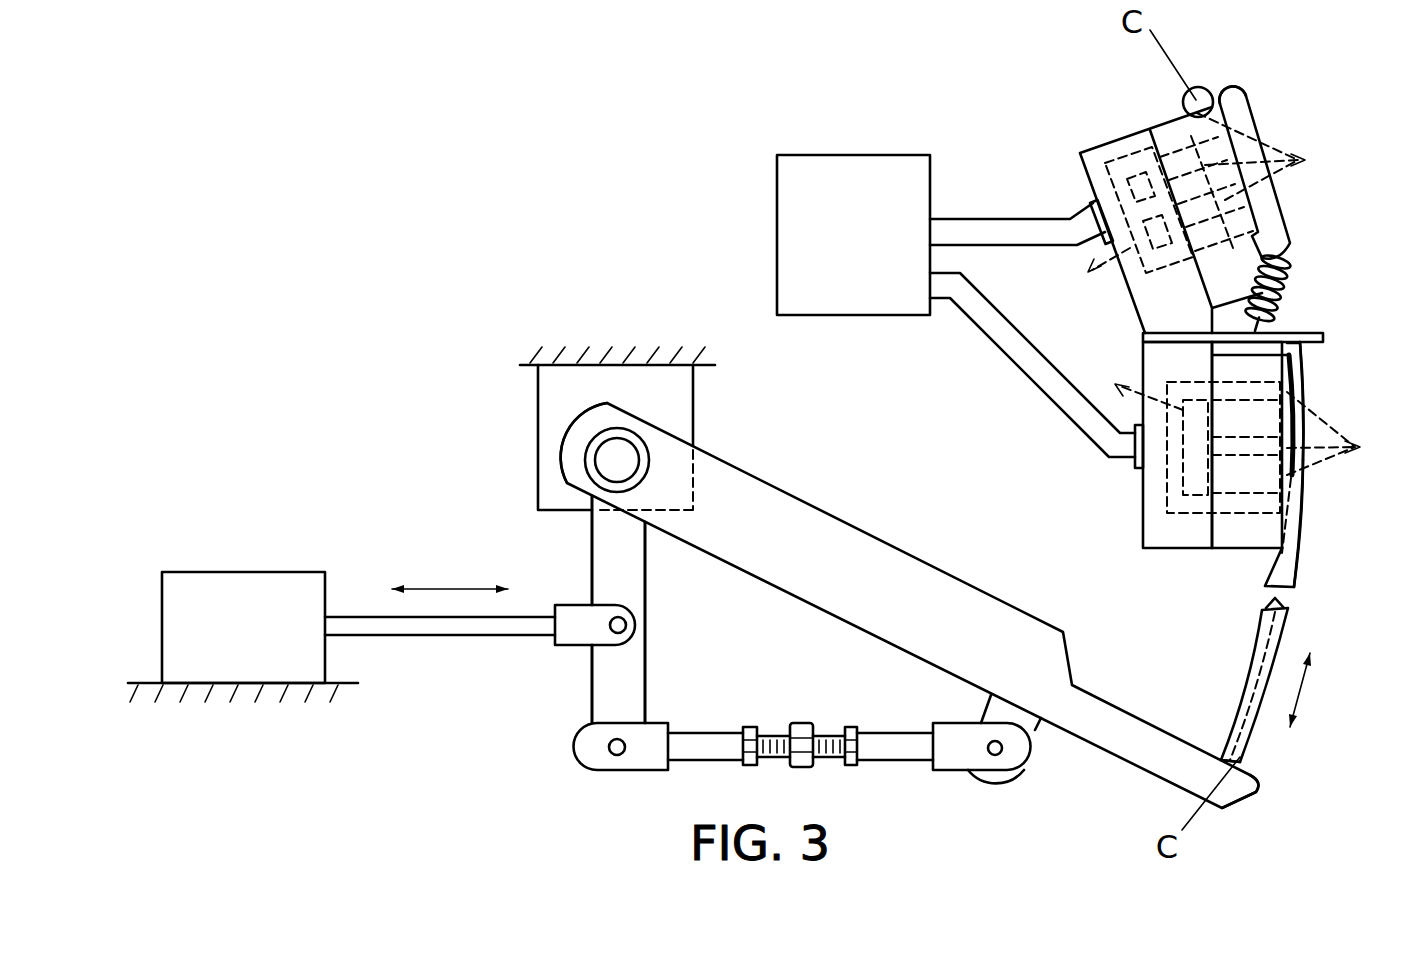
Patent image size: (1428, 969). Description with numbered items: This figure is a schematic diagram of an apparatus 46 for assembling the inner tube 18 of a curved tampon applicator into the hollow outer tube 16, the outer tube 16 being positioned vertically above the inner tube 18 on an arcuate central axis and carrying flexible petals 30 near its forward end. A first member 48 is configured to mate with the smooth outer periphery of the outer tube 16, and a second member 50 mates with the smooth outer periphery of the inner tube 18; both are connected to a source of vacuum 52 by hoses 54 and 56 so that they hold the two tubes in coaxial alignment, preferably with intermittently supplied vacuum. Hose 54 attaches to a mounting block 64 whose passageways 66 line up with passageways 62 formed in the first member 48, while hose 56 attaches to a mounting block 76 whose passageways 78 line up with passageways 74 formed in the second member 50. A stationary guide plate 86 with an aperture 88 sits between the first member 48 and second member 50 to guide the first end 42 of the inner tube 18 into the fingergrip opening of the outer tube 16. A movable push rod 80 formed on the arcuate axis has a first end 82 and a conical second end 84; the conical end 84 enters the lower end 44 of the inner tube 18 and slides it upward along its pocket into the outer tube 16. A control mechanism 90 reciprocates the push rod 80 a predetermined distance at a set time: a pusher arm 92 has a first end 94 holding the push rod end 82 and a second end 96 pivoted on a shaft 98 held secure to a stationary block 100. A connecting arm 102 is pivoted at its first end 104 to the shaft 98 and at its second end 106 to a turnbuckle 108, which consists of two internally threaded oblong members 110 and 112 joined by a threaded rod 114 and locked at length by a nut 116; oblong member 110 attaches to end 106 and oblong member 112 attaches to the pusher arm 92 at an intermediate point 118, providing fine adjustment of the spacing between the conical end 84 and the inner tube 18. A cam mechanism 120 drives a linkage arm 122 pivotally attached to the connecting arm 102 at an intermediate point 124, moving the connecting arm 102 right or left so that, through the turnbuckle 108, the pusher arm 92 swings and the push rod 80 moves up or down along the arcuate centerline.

The outer tube 16 is at (1284, 217).
The inner tube 18 is at (1315, 527).
The petals 30 is at (1207, 87).
The first end of inner tube 42 is at (1303, 343).
The second end of inner tube 44 is at (1287, 603).
The apparatus 46 is at (535, 172).
The first member 48 is at (1183, 118).
The second member 50 is at (1242, 552).
The source of vacuum 52 is at (787, 200).
The hose 54 is at (1008, 228).
The hose 56 is at (1013, 333).
The passageways 62 is at (1221, 193).
The mounting block 64 is at (1118, 140).
The passageways 66 is at (1088, 270).
The passageways 74 is at (1281, 447).
The mounting block 76 is at (1172, 552).
The passageways 78 is at (1132, 384).
The push rod 80 is at (1248, 660).
The first end of push rod 82 is at (1236, 761).
The second end of push rod 84 is at (1283, 607).
The guide plate 86 is at (1323, 337).
The aperture 88 is at (1297, 320).
The control mechanism 90 is at (812, 465).
The pusher arm 92 is at (905, 555).
The first end of pusher arm 94 is at (1233, 793).
The second end of pusher arm 96 is at (572, 462).
The shaft 98 is at (640, 440).
The stationary block 100 is at (538, 387).
The connecting arm 102 is at (600, 672).
The first end of connecting arm 104 is at (590, 510).
The second end of connecting arm 106 is at (612, 756).
The turnbuckle 108 is at (774, 735).
The oblong member 110 is at (710, 732).
The oblong member 112 is at (885, 733).
The threaded rod 114 is at (827, 758).
The nut 116 is at (753, 768).
The point 118 is at (1003, 748).
The cam mechanism 120 is at (260, 585).
The linkage arm 122 is at (428, 634).
The point 124 is at (628, 625).